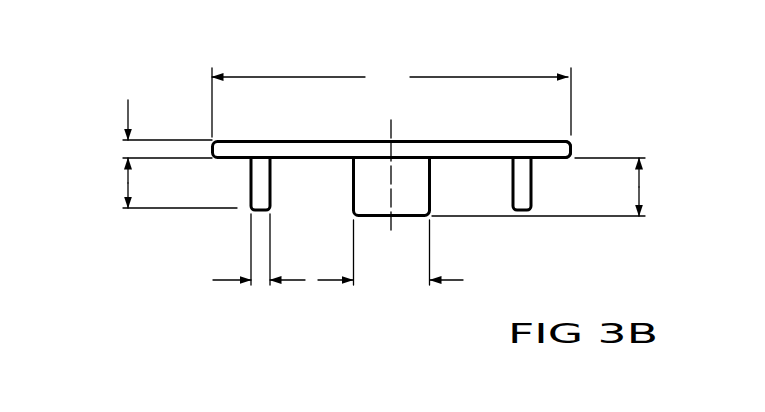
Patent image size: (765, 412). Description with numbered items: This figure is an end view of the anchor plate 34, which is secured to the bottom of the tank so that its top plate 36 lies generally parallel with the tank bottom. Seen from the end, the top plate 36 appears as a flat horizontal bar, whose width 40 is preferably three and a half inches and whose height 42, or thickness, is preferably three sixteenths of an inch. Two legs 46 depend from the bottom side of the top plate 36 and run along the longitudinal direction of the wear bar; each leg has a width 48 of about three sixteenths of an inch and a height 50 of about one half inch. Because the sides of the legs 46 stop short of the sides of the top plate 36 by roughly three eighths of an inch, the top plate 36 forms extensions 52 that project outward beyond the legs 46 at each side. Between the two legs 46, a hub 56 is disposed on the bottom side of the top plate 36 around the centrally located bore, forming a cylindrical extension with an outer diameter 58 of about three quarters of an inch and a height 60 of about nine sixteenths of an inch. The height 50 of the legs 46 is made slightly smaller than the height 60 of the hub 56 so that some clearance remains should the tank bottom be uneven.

The anchor plate 34 is at (152, 57).
The top plate 36 is at (452, 139).
The width 40 is at (391, 100).
The height 42 is at (128, 148).
The legs 46 is at (533, 187).
The width 48 is at (260, 283).
The height 50 is at (128, 183).
The extensions 52 is at (574, 147).
The hub 56 is at (357, 190).
The outer diameter 58 is at (390, 258).
The height 60 is at (641, 187).